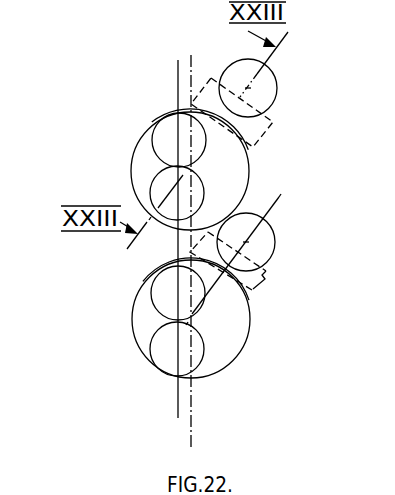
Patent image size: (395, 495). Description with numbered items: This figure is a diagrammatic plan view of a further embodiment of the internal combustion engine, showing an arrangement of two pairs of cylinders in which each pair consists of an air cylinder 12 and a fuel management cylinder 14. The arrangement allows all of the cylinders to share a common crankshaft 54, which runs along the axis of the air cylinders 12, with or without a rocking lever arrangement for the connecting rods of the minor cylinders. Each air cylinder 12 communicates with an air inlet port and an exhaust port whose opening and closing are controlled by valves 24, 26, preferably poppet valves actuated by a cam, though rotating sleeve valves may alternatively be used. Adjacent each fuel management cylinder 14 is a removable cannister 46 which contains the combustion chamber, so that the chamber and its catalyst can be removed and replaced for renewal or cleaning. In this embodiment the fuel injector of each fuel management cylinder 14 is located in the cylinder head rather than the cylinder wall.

The air cylinder 12 is at (233, 177).
The fuel management cylinder 14 is at (257, 88).
The valve 24 is at (170, 133).
The valve 26 is at (170, 181).
The removable cannister 46 is at (207, 103).
The common crankshaft 54 is at (192, 418).